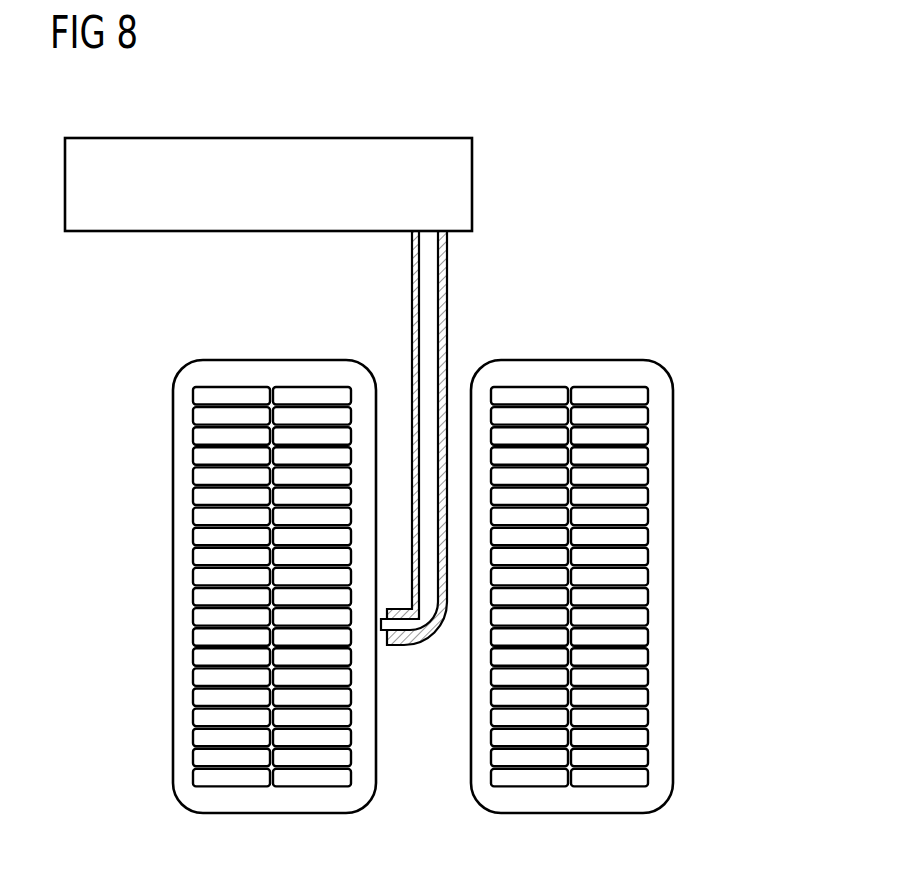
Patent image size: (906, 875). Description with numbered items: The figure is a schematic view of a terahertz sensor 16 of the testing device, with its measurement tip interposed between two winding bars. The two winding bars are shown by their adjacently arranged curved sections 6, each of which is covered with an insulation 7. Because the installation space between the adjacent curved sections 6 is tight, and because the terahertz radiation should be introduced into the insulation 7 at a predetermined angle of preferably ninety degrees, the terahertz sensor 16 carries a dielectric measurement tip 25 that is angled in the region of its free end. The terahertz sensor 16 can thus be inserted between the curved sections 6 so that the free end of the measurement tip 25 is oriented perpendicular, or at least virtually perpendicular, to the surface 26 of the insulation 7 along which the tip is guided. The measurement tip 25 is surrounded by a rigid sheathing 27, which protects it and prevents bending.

The terahertz sensor 16 is at (265, 138).
The dielectric measurement tip 25 is at (447, 263).
The rigid sheathing 27 is at (430, 315).
The curved section 6 is at (427, 586).
The insulation 7 is at (168, 510).
The surface 26 is at (377, 767).